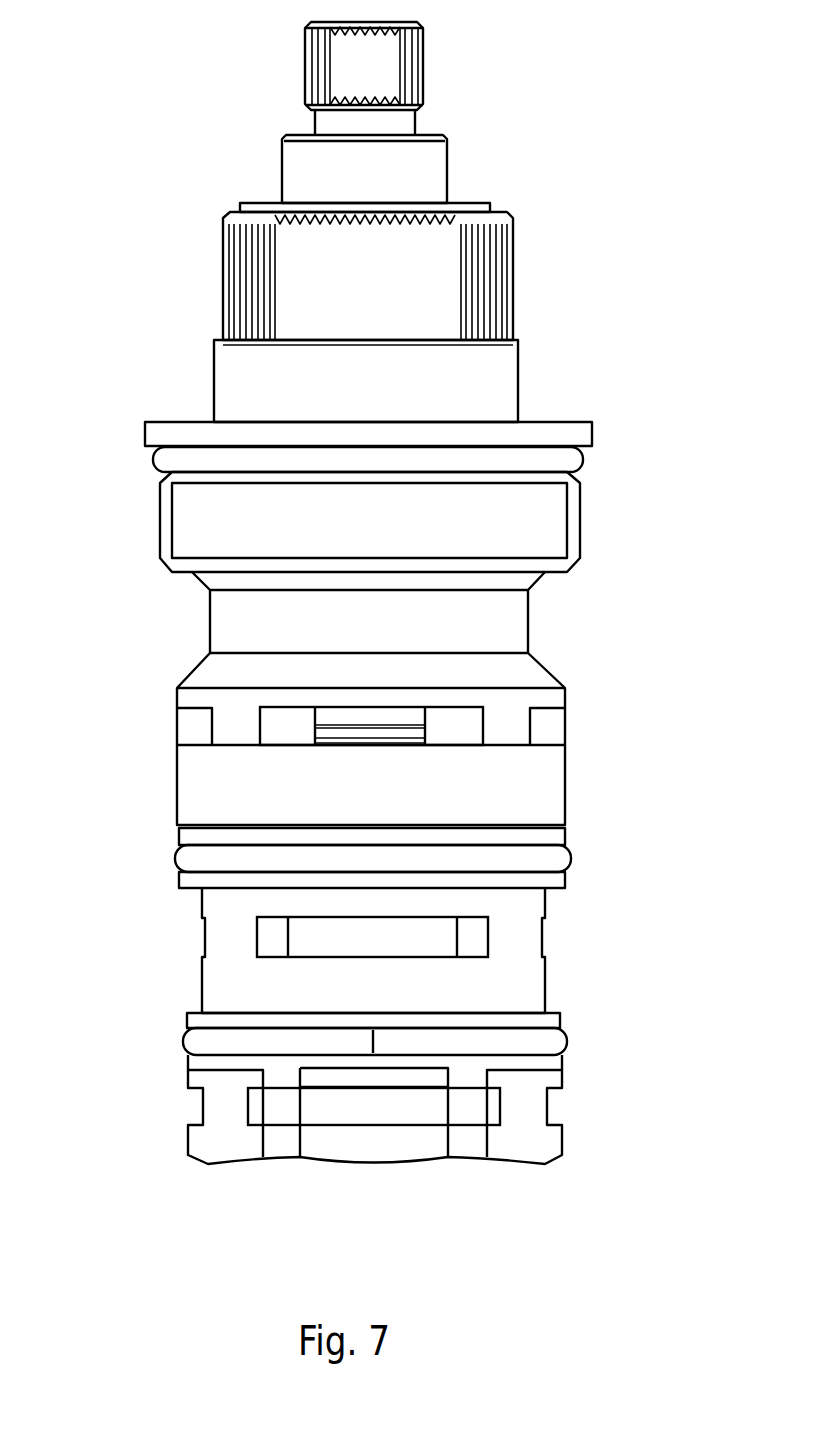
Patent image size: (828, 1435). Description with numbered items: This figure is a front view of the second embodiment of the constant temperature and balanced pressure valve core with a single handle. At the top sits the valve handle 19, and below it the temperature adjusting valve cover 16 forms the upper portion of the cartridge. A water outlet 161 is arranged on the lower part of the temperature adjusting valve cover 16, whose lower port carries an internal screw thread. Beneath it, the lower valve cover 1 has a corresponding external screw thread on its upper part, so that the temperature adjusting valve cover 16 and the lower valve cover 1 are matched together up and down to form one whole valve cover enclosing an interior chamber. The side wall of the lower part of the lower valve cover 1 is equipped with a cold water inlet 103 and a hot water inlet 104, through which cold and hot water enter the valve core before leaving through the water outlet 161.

The lower valve cover 1 is at (543, 1153).
The valve handle 19 is at (308, 79).
The temperature adjusting valve cover 16 is at (167, 528).
The water outlet 161 is at (292, 727).
The cold water inlet 103 is at (440, 932).
The hot water inlet 104 is at (435, 1103).